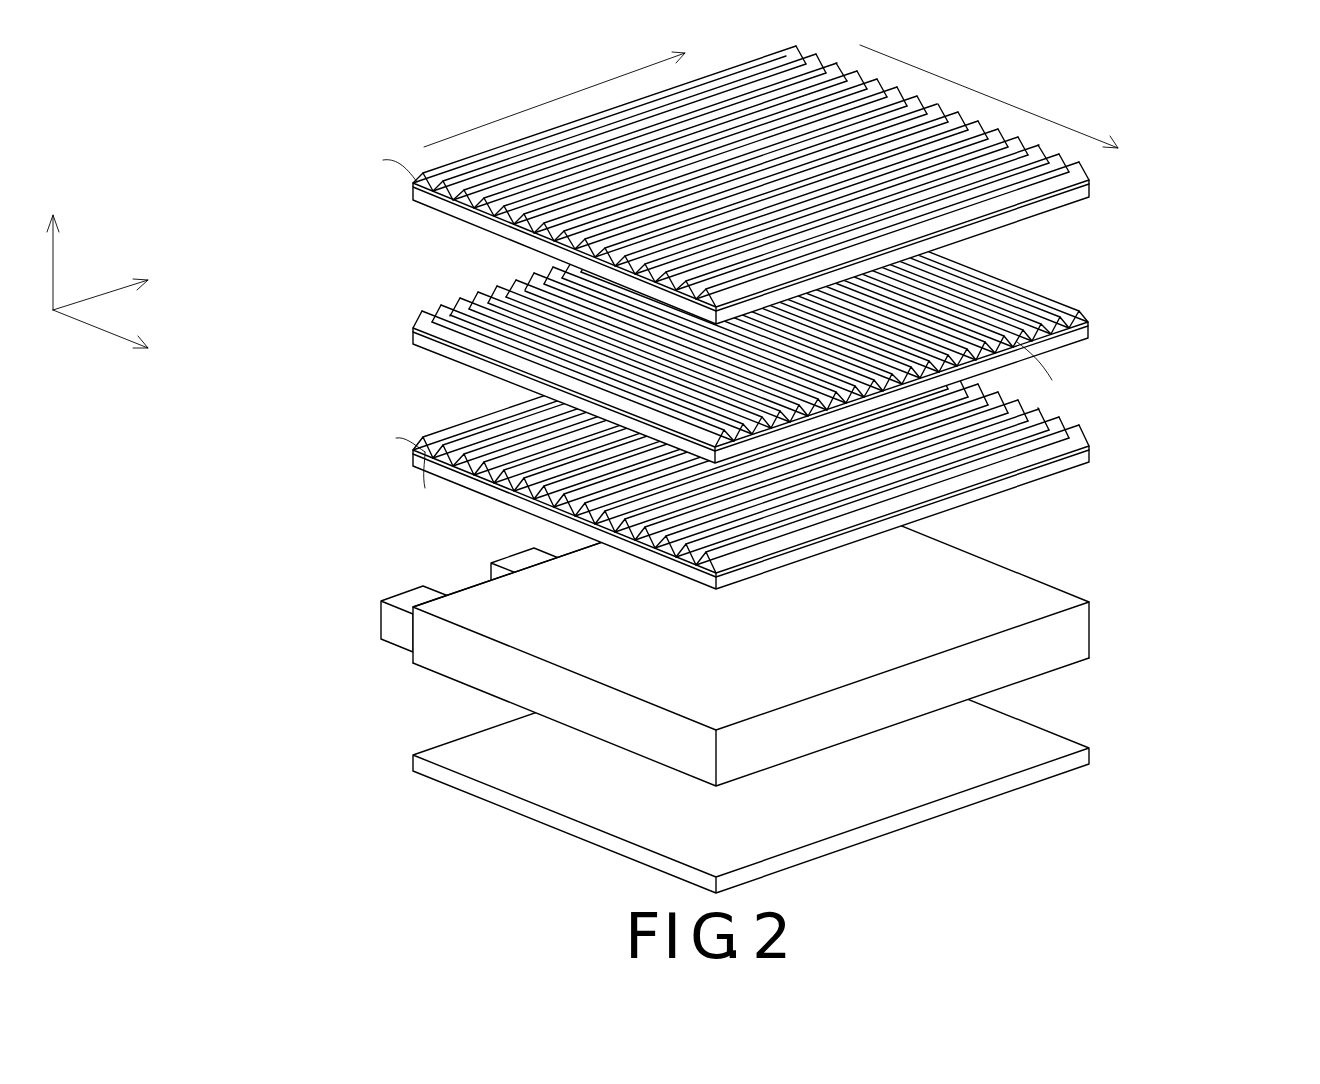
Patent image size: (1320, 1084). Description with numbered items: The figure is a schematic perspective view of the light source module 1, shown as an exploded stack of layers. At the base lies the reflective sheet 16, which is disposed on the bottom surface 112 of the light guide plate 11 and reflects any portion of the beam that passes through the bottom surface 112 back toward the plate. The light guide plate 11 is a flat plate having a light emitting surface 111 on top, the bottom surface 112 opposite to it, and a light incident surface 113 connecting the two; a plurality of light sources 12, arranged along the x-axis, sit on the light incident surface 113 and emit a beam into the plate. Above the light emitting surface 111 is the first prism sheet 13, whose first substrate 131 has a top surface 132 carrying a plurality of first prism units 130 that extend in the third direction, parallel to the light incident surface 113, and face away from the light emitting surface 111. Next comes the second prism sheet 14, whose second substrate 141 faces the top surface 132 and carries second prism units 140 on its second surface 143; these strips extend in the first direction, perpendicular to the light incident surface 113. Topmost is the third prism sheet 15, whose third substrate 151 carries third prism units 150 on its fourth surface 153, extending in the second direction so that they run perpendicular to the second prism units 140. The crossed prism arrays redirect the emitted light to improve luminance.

The light source module 1 is at (284, 118).
The light guide plate 11 is at (668, 632).
The light emitting surface 111 is at (452, 626).
The bottom surface 112 is at (441, 688).
The light incident surface 113 is at (404, 640).
The light source 12 is at (415, 603).
The first prism sheet 13 is at (806, 447).
The first prism units 130 is at (1070, 430).
The first substrate 131 is at (811, 456).
The top surface 132 is at (1041, 474).
The second prism sheet 14 is at (853, 326).
The second prism units 140 is at (1068, 304).
The second substrate 141 is at (829, 333).
The second surface 143 is at (1083, 338).
The third prism sheet 15 is at (795, 183).
The third prism units 150 is at (1072, 162).
The third substrate 151 is at (811, 190).
The fourth surface 153 is at (1041, 207).
The reflective sheet 16 is at (1078, 762).